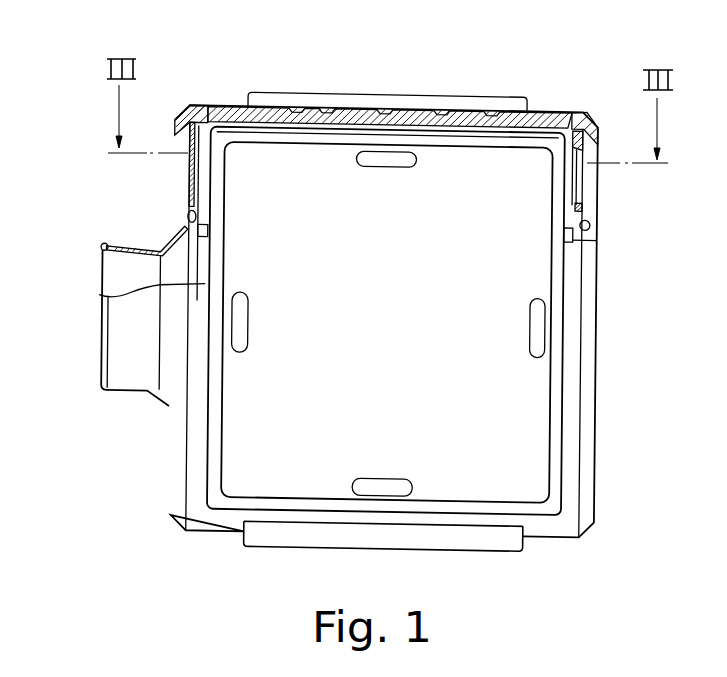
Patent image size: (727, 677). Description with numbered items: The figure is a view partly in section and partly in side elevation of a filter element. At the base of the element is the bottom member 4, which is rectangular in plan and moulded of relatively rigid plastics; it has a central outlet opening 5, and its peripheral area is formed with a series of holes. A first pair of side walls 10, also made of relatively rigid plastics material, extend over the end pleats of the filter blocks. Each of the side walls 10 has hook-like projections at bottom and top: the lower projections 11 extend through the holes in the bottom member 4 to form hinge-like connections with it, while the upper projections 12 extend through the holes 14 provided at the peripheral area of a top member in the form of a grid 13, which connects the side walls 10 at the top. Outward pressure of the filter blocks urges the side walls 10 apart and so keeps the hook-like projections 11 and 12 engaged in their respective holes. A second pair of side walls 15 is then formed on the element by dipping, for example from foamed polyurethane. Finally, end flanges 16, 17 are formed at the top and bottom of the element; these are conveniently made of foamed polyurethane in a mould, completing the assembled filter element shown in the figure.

The bottom member 4 is at (188, 183).
The central outlet opening 5 is at (105, 245).
The first pair of side walls 10 is at (240, 452).
The lower hook-like projections 11 is at (188, 217).
The upper hook-like projections 12 is at (590, 226).
The grid 13 is at (580, 185).
The holes 14 is at (578, 212).
The second pair of side walls 15 is at (372, 118).
The end flange 16 is at (585, 318).
The end flange 17 is at (193, 103).